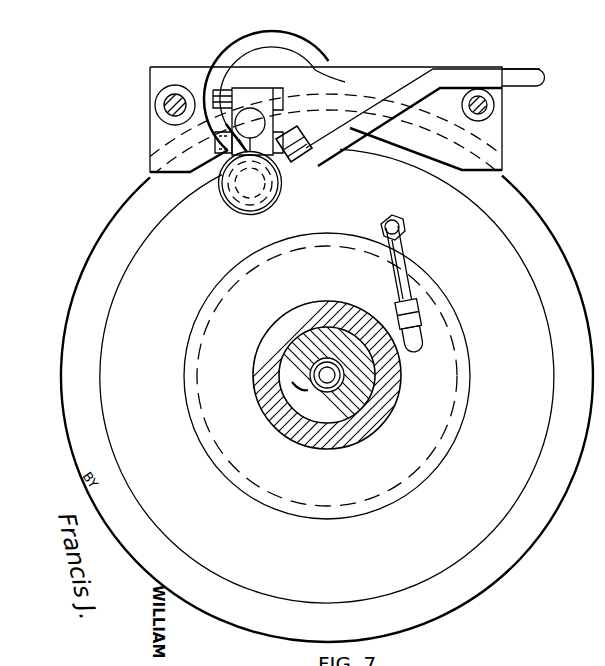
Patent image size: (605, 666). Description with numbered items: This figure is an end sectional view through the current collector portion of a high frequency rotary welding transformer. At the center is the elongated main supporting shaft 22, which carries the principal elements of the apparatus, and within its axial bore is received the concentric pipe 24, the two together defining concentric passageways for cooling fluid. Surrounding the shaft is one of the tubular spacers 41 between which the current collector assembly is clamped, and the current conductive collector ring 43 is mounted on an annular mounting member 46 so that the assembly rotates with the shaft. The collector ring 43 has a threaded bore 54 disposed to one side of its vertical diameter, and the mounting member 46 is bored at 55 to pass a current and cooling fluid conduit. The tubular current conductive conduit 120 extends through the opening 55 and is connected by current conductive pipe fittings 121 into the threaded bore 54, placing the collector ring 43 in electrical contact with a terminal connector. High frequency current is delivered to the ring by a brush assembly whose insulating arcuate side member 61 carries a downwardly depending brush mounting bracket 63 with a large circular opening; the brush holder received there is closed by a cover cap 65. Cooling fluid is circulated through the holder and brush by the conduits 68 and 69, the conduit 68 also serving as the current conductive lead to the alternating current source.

The main supporting shaft 22 is at (307, 390).
The pipe 24 is at (327, 358).
The tubular spacer 41 is at (297, 432).
The current conductive collector ring 43 is at (116, 308).
The annular mounting member 46 is at (228, 450).
The threaded bore 54 is at (398, 224).
The bore 55 is at (420, 318).
The arcuate side member 61 is at (404, 75).
The brush mounting bracket 63 is at (316, 68).
The cover cap 65 is at (222, 150).
The conduit 68 is at (520, 79).
The conduit 69 is at (228, 55).
The tubular current conductive conduit 120 is at (418, 346).
The current conductive pipe fittings 121 is at (400, 280).